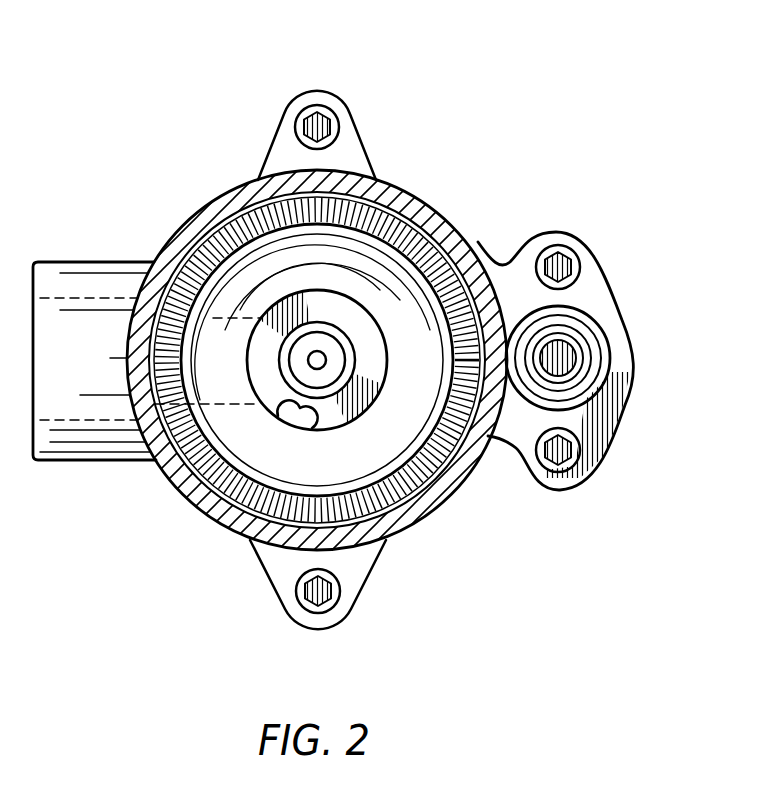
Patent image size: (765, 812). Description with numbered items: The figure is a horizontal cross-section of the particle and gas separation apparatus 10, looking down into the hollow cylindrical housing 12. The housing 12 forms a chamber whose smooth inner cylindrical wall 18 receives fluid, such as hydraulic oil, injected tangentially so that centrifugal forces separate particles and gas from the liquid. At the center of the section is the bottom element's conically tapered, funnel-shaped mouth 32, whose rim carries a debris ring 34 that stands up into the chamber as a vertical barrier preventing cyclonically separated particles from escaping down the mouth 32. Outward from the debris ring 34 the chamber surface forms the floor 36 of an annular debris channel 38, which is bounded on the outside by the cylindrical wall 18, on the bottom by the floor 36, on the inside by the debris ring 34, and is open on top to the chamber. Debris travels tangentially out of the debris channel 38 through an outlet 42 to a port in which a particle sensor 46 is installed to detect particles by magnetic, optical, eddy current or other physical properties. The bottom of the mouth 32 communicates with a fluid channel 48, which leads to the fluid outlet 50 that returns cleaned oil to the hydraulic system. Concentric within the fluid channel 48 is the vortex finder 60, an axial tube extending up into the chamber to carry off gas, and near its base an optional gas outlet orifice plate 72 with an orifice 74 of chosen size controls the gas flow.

The particle and gas separation apparatus 10 is at (578, 108).
The hollow cylindrical housing 12 is at (232, 182).
The cylindrical wall 18 is at (445, 487).
The funnel-shaped mouth 32 is at (378, 268).
The debris ring 34 is at (247, 517).
The floor 36 is at (398, 515).
The annular debris channel 38 is at (230, 486).
The outlet 42 is at (505, 262).
The particle sensor 46 is at (560, 357).
The fluid channel 48 is at (313, 428).
The fluid outlet 50 is at (100, 462).
The vortex finder 60 is at (347, 335).
The gas outlet orifice plate 72 is at (327, 360).
The orifice 74 is at (360, 380).